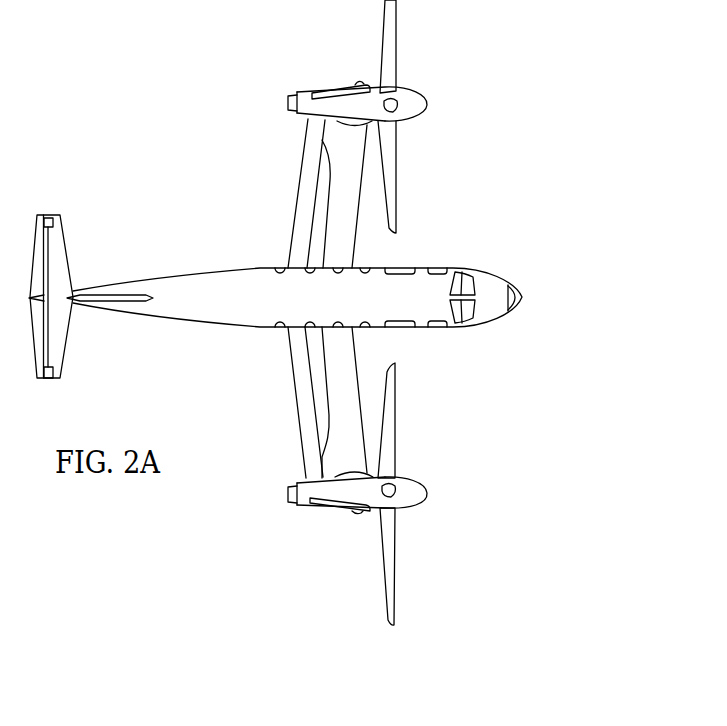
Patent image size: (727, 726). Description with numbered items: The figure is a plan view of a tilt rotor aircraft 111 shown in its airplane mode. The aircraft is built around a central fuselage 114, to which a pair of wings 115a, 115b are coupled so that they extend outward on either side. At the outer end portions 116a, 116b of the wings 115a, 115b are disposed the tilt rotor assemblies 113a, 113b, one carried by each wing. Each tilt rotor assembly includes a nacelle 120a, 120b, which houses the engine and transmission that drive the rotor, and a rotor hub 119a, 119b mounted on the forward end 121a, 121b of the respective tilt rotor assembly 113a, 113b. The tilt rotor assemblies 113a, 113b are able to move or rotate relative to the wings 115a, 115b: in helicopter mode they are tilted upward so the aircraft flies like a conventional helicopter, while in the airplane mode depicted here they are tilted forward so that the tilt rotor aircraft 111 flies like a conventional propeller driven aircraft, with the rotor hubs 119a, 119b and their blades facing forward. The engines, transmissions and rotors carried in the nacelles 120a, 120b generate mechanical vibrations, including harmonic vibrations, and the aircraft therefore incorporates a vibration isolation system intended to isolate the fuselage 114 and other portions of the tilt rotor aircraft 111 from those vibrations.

The tilt rotor aircraft 111 is at (172, 248).
The fuselage 114 is at (210, 327).
The wing 115a is at (298, 185).
The wing 115b is at (298, 409).
The end portion of wing 116a is at (305, 121).
The end portion of wing 116b is at (303, 477).
The tilt rotor assembly 113a is at (307, 81).
The tilt rotor assembly 113b is at (309, 514).
The rotor hub 119a is at (420, 97).
The rotor hub 119b is at (418, 500).
The nacelle 120a is at (300, 92).
The nacelle 120b is at (298, 505).
The forward end of tilt rotor assembly 121a is at (381, 124).
The forward end of tilt rotor assembly 121b is at (379, 476).